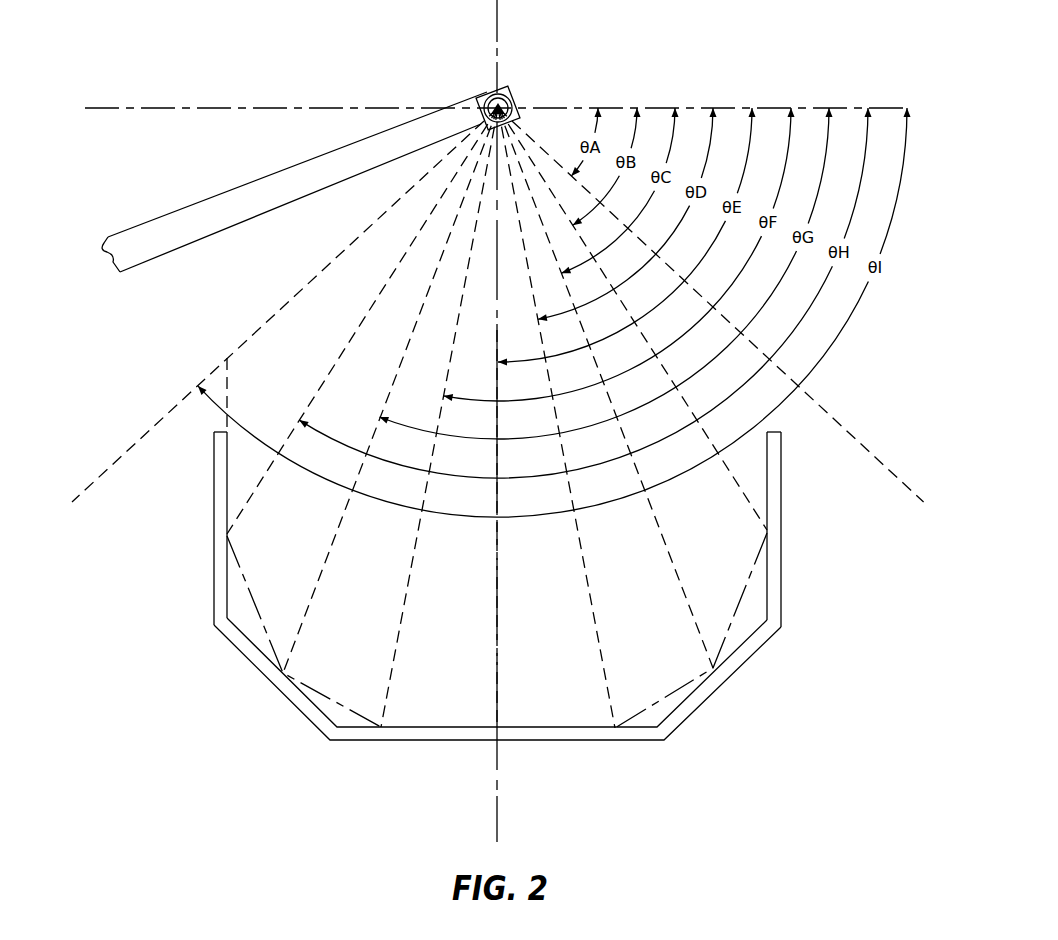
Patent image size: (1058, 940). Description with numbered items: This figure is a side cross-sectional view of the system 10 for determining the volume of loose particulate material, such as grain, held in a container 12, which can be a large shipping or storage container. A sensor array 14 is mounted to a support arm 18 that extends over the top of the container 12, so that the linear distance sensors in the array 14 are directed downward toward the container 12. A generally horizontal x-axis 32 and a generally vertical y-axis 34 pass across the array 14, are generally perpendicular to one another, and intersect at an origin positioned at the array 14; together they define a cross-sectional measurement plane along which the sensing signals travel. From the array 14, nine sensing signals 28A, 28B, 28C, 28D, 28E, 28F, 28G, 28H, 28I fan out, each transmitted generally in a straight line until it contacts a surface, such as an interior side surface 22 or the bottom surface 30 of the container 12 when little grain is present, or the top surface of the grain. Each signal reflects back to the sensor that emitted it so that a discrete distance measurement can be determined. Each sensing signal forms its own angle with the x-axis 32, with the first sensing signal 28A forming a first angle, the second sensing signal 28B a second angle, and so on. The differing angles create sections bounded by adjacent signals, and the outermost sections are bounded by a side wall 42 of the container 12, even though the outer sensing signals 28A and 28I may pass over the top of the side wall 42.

The system 10 is at (722, 26).
The container 12 is at (517, 549).
The sensor array 14 is at (478, 88).
The support arm 18 is at (307, 162).
The interior side surface 22 is at (229, 500).
The first sensing signal 28A is at (823, 408).
The second sensing signal 28B is at (733, 483).
The third sensing signal 28C is at (670, 560).
The fourth sensing signal 28D is at (592, 610).
The fifth sensing signal 28E is at (500, 633).
The sixth sensing signal 28F is at (404, 625).
The seventh sensing signal 28G is at (318, 575).
The eighth sensing signal 28H is at (330, 378).
The ninth sensing signal 28I is at (292, 300).
The bottom surface 30 is at (528, 726).
The x-axis 32 is at (692, 106).
The y-axis 34 is at (497, 27).
The side wall 42 is at (781, 502).